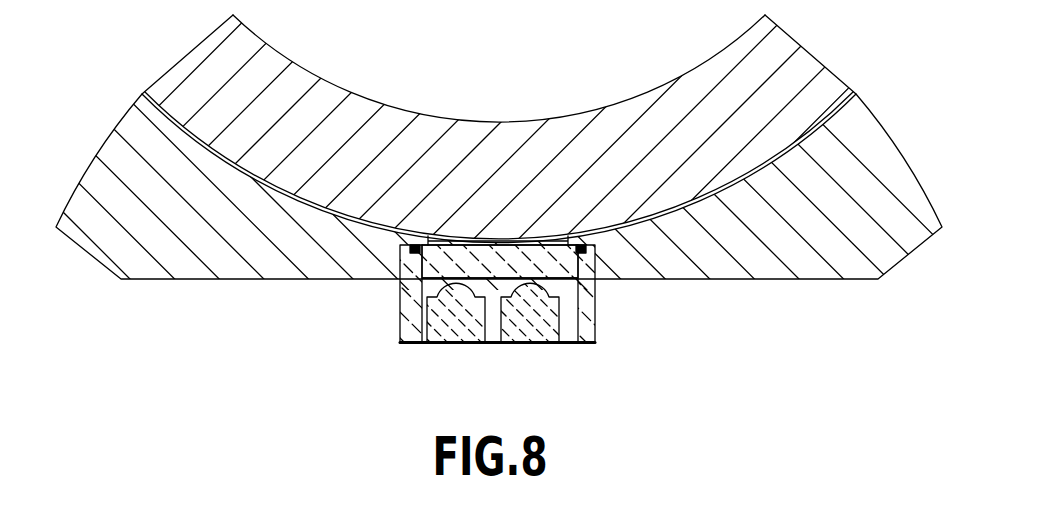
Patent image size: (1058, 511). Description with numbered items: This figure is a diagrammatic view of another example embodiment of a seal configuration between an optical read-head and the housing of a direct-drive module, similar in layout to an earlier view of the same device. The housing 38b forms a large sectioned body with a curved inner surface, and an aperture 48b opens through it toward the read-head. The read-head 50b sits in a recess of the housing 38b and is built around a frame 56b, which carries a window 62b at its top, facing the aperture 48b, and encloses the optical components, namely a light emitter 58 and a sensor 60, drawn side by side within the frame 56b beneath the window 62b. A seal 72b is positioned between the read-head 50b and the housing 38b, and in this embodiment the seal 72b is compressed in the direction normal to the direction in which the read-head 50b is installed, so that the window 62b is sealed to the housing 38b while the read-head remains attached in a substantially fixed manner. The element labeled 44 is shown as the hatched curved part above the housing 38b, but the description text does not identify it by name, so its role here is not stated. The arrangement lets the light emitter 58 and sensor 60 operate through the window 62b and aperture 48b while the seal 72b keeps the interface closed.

The housing 38b is at (115, 267).
The outer layer 44 is at (298, 87).
The aperture 48b is at (437, 243).
The read-head 50b is at (419, 227).
The frame 56b is at (597, 318).
The light emitter 58 is at (518, 333).
The sensor 60 is at (442, 332).
The window 62b is at (505, 252).
The seal 72b is at (581, 244).